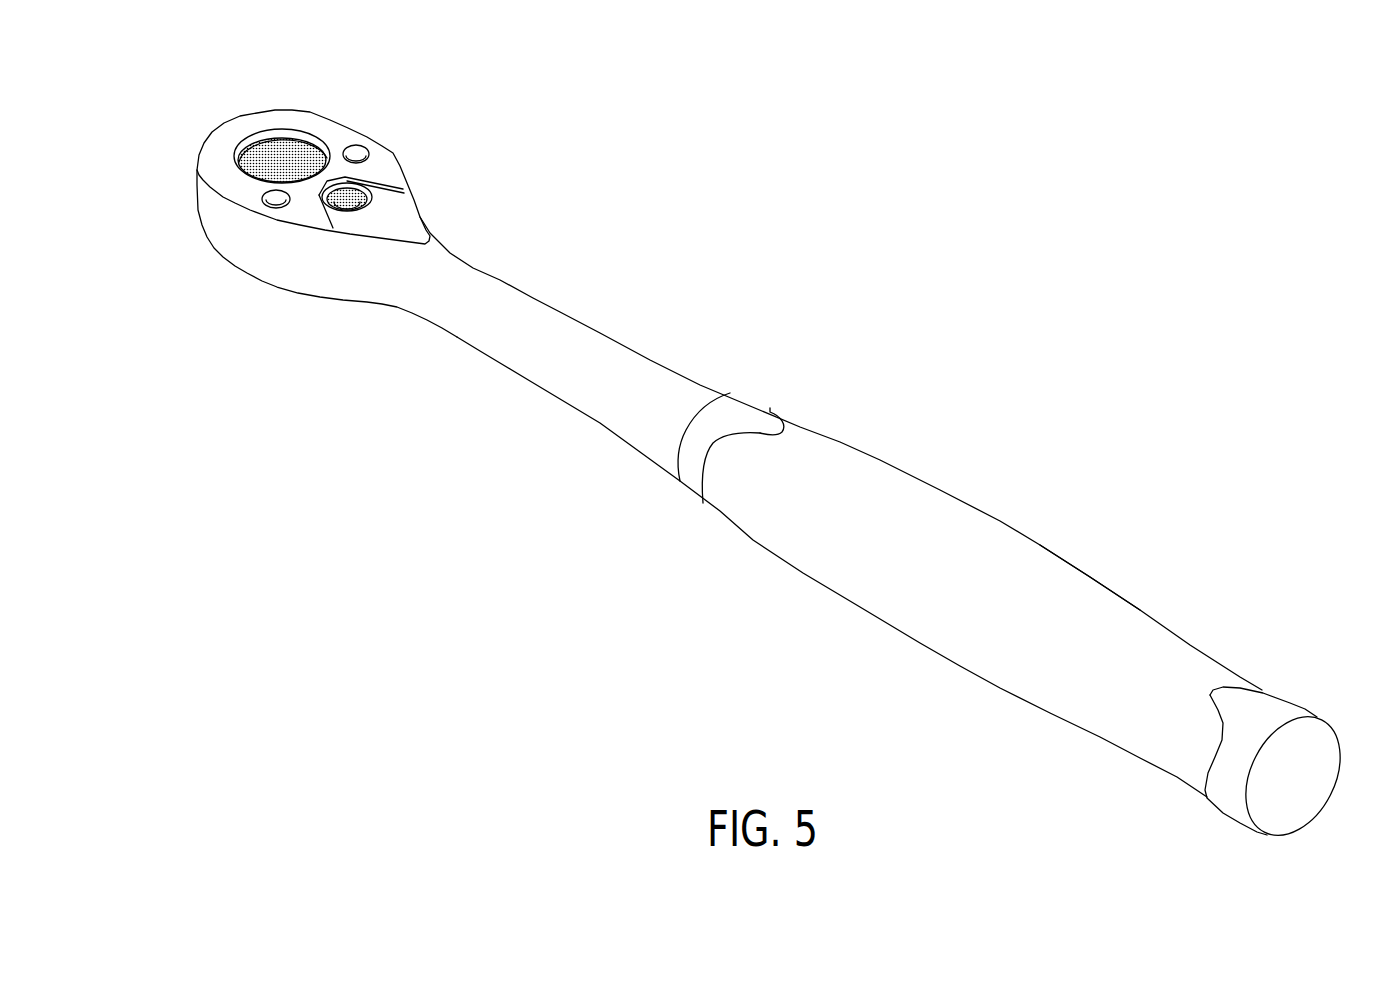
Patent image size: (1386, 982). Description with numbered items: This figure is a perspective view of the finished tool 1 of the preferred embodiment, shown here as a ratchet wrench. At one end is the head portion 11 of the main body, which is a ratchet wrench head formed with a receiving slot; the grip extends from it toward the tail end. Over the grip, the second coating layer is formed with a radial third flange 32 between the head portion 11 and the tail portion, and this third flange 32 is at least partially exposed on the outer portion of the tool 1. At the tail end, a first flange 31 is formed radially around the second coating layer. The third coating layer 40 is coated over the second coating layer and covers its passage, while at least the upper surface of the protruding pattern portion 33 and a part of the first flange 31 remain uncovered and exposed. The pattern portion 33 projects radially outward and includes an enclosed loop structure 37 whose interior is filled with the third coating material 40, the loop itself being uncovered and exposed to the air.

The tool 1 is at (963, 410).
The head portion 11 is at (407, 157).
The first flange 31 is at (1270, 710).
The third flange 32 is at (747, 417).
The pattern portion 33 is at (1003, 540).
The enclosed loop structure 37 is at (963, 513).
The third coating layer 40 is at (1067, 590).